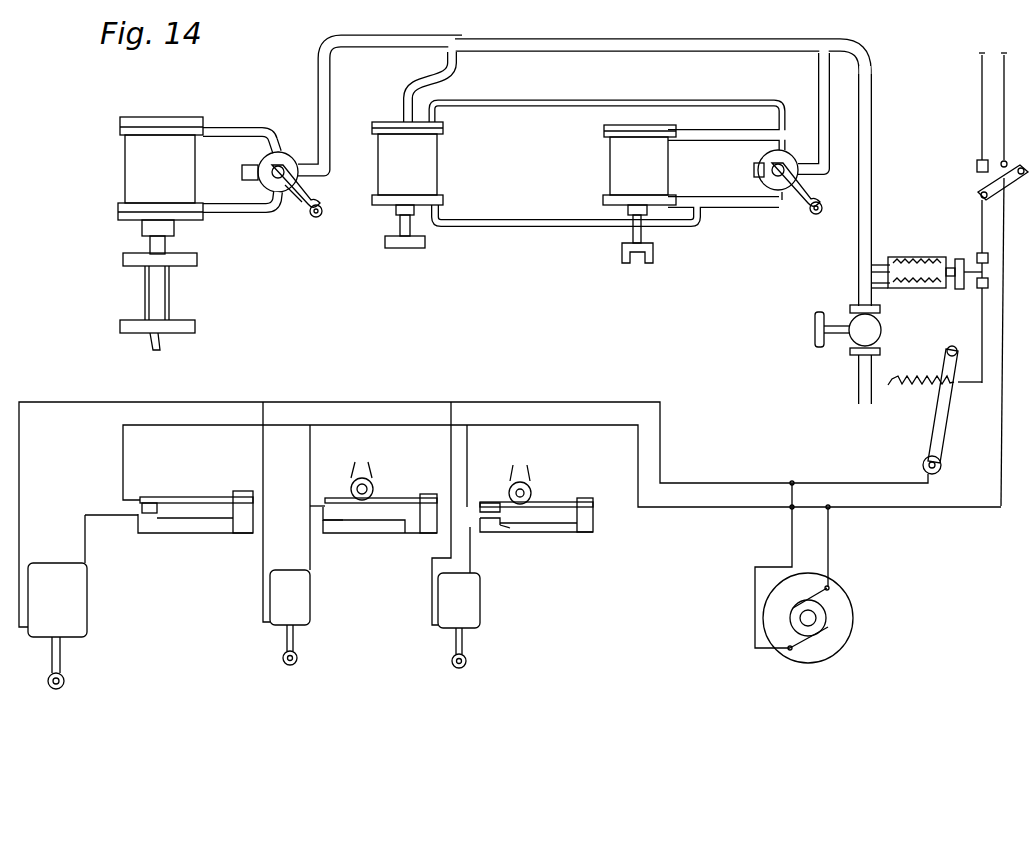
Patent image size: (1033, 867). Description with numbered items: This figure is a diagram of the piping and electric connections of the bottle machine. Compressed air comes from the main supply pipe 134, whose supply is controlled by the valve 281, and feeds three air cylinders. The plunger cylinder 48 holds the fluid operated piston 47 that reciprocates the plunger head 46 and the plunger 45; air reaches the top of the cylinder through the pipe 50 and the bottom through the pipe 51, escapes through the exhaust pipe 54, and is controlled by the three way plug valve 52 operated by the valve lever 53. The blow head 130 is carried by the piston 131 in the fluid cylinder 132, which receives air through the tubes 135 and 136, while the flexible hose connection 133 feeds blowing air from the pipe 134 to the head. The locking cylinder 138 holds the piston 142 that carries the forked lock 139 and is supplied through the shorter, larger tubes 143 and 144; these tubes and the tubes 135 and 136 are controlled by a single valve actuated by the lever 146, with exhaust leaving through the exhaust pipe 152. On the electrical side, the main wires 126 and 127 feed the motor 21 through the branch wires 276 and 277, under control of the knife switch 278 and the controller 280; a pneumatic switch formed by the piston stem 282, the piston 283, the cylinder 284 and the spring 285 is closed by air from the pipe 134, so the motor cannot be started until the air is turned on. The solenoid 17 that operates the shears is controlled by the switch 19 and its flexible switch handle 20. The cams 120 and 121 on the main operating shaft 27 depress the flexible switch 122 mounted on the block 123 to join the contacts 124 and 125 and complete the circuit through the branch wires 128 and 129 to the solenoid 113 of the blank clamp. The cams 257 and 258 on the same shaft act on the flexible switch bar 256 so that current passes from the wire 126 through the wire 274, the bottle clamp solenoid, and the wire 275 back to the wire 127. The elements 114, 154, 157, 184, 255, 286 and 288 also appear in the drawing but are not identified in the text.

The solenoid 17 is at (75, 595).
The electric switch 19 is at (142, 507).
The flexible switch handle 20 is at (190, 494).
The motor 21 is at (853, 618).
The main operating shaft 27 is at (444, 461).
The plunger 45 is at (152, 346).
The plunger head 46 is at (193, 260).
The fluid operated piston 47 is at (160, 246).
The cylinder 48 is at (166, 122).
The pipe 50 is at (242, 127).
The pipe 51 is at (268, 214).
The three way plug valve 52 is at (305, 184).
The valve lever 53 is at (298, 204).
The exhaust pipe 54 is at (242, 172).
The solenoid 113 is at (302, 603).
The plunger 114 is at (286, 645).
The cam 120 is at (374, 486).
The cam 121 is at (350, 484).
The flexible switch 122 is at (405, 535).
The block 123 is at (368, 536).
The contact 124 is at (326, 502).
The contact 125 is at (323, 519).
The main wire 126 is at (982, 96).
The main wire 127 is at (1004, 122).
The branch wire 128 is at (373, 402).
The branch wire 129 is at (248, 604).
The blow head 130 is at (404, 255).
The piston 131 is at (400, 226).
The fluid cylinder 132 is at (378, 165).
The flexible hose connection 133 is at (432, 71).
The main supply pipe 134 is at (526, 38).
The tube 135 is at (520, 103).
The tube 136 is at (486, 228).
The locking cylinder 138 is at (610, 160).
The forked lock 139 is at (622, 260).
The piston 142 is at (633, 236).
The tube 143 is at (718, 142).
The tube 144 is at (712, 209).
The lever 146 is at (800, 208).
The exhaust pipe 152 is at (754, 170).
The pipe 154 is at (872, 232).
The valve outlet 157 is at (781, 208).
The pipe end 184 is at (858, 388).
The switch bar 255 is at (536, 515).
The flexible switch bar 256 is at (563, 503).
The cam 257 is at (532, 486).
The cam 258 is at (508, 497).
The wire 274 is at (468, 463).
The wire 275 is at (982, 272).
The branch wire 276 is at (792, 540).
The branch wire 277 is at (830, 556).
The knife switch 278 is at (980, 194).
The controller 280 is at (935, 414).
The valve 281 is at (842, 343).
The piston stem 282 is at (960, 285).
The piston 283 is at (915, 250).
The cylinder 284 is at (905, 288).
The spring 285 is at (959, 259).
The contact 286 is at (517, 533).
The collar 288 is at (978, 290).